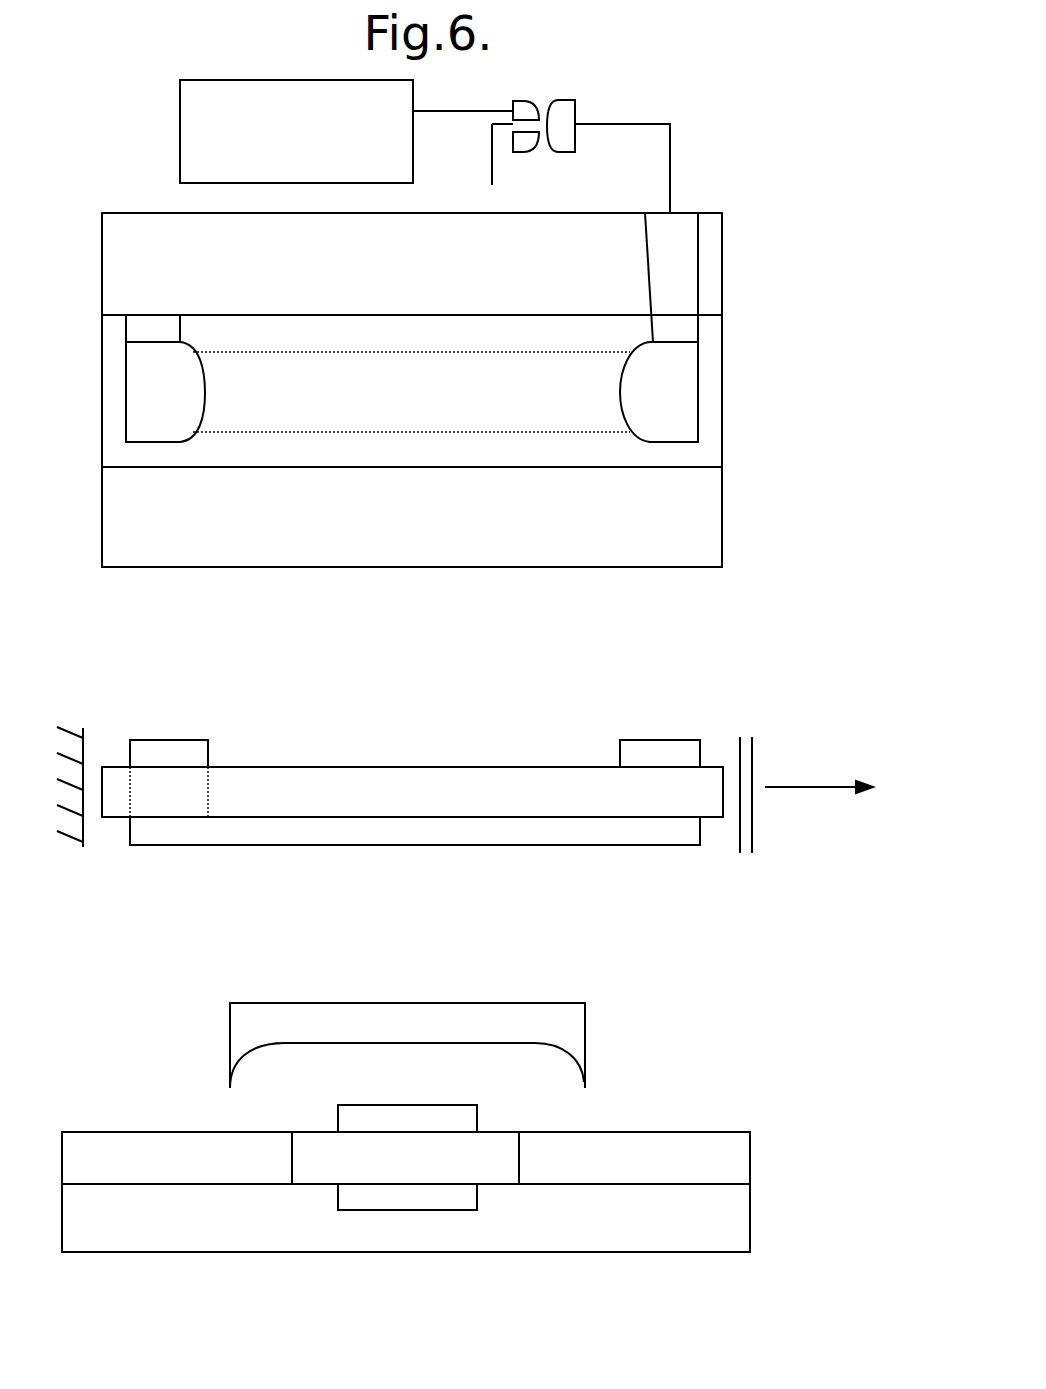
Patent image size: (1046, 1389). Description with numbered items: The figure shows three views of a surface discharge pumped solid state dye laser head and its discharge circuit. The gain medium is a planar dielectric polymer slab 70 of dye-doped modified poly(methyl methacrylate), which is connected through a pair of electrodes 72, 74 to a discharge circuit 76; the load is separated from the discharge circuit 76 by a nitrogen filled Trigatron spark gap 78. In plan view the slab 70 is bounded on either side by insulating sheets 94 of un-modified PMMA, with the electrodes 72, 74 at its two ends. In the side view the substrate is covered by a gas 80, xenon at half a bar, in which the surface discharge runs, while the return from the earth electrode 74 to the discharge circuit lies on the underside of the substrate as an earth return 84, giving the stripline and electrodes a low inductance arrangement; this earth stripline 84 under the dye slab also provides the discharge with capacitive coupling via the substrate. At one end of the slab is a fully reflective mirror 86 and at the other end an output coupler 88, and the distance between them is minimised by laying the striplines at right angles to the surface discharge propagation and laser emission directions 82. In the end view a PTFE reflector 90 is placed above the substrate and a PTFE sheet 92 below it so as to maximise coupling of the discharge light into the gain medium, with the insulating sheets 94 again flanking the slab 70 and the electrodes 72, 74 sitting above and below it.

The planar dielectric polymer slab 70 is at (412, 764).
The electrode 72 is at (682, 358).
The earth electrode 74 is at (147, 350).
The discharge circuit 76 is at (346, 131).
The Trigatron spark gap 78 is at (581, 142).
The gas 80 is at (407, 912).
The surface discharge propagation and laser emission directions 82 is at (819, 776).
The earth return 84 is at (415, 850).
The 100% reflective mirror 86 is at (70, 805).
The output coupler 88 is at (747, 810).
The PTFE reflector 90 is at (407, 1028).
The PTFE sheet 92 is at (406, 1218).
The insulating sheet 94 is at (406, 732).